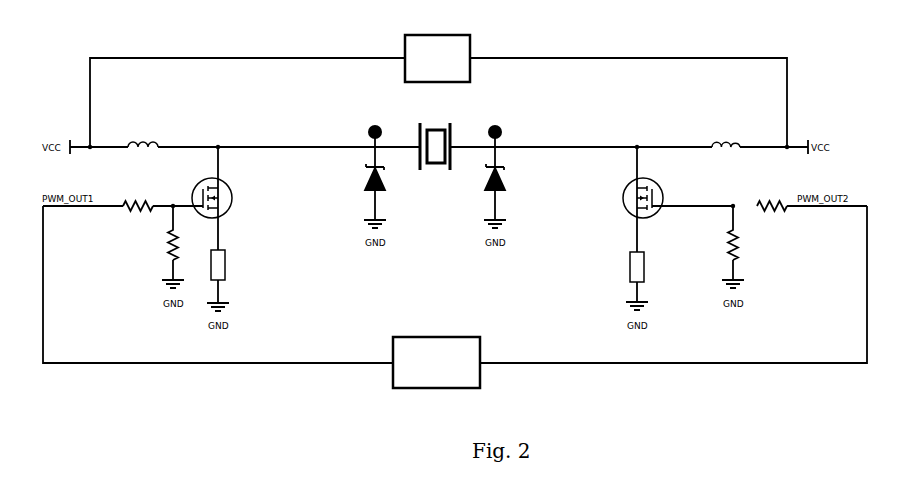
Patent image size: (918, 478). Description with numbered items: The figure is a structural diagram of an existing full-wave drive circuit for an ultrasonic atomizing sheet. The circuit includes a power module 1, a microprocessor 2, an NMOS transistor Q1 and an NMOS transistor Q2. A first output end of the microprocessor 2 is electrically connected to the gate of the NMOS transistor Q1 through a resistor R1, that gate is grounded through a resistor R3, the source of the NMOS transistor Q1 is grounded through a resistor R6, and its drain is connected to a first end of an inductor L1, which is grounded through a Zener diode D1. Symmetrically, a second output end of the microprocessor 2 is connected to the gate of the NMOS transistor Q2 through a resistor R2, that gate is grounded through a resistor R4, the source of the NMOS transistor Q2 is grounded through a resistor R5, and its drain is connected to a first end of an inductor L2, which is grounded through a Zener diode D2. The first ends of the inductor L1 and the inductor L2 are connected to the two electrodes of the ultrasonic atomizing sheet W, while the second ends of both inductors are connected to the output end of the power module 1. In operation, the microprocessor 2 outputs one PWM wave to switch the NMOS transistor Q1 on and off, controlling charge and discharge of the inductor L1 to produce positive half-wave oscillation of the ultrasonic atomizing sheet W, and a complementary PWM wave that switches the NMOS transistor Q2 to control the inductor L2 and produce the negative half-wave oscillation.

The power module 1 is at (437, 58).
The microprocessor 2 is at (436, 362).
The inductor L1 is at (143, 138).
The inductor L2 is at (726, 138).
The resistor R1 is at (138, 198).
The resistor R2 is at (772, 198).
The resistor R3 is at (181, 233).
The resistor R4 is at (742, 233).
The resistor R5 is at (644, 267).
The resistor R6 is at (226, 265).
The NMOS transistor Q1 is at (222, 198).
The NMOS transistor Q2 is at (634, 198).
The Zener diode D1 is at (388, 158).
The Zener diode D2 is at (508, 158).
The ultrasonic atomizing sheet W is at (435, 139).